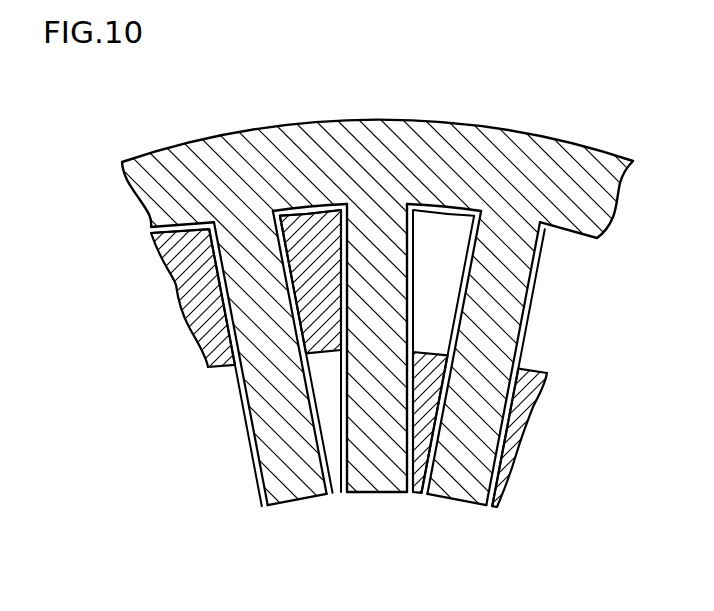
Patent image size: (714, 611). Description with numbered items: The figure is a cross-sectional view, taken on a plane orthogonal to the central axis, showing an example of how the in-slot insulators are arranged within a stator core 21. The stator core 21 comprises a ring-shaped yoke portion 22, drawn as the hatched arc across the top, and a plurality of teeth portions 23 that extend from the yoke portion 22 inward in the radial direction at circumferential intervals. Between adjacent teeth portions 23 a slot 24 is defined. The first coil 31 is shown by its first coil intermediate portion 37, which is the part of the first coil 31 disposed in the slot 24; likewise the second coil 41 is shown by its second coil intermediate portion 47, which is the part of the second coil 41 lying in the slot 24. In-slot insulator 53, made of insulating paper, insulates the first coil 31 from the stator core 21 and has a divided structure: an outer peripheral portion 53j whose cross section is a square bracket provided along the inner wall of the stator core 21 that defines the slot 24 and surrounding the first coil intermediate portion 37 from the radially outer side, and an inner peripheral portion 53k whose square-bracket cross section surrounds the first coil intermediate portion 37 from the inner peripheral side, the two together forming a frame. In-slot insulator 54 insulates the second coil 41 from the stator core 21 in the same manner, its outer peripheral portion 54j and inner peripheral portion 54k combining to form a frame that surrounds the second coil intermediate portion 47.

The stator core 21 is at (136, 131).
The yoke portion 22 is at (445, 150).
The teeth portion 23 is at (297, 483).
The slot 24 is at (337, 483).
The first coil 31 is at (357, 305).
The first coil intermediate portion 37 is at (311, 232).
The second coil 41 is at (508, 470).
The second coil intermediate portion 47 is at (523, 400).
The in-slot insulator 53 is at (223, 280).
The inner peripheral portion 53k is at (297, 335).
The outer peripheral portion 53j is at (280, 262).
The in-slot insulator 54 is at (518, 399).
The inner peripheral portion 54k is at (496, 473).
The outer peripheral portion 54j is at (498, 440).